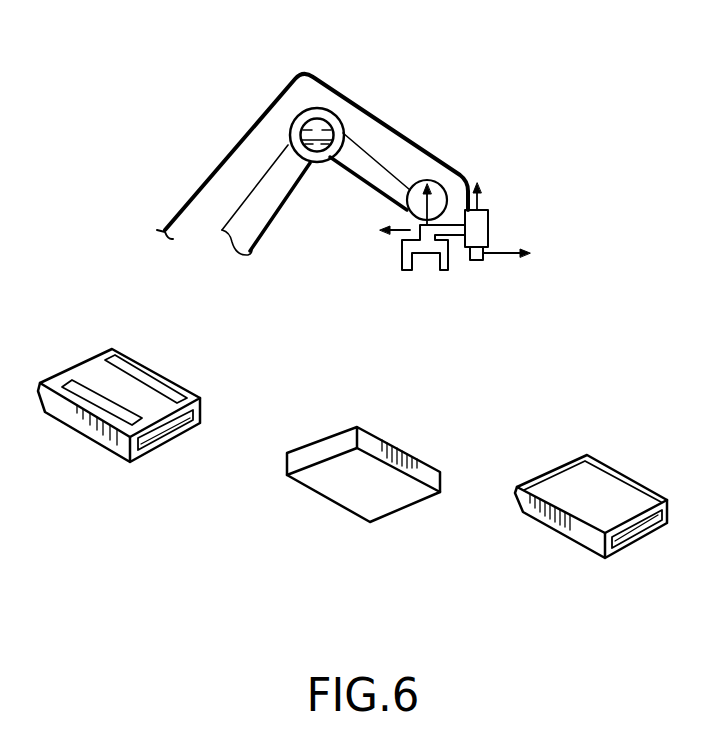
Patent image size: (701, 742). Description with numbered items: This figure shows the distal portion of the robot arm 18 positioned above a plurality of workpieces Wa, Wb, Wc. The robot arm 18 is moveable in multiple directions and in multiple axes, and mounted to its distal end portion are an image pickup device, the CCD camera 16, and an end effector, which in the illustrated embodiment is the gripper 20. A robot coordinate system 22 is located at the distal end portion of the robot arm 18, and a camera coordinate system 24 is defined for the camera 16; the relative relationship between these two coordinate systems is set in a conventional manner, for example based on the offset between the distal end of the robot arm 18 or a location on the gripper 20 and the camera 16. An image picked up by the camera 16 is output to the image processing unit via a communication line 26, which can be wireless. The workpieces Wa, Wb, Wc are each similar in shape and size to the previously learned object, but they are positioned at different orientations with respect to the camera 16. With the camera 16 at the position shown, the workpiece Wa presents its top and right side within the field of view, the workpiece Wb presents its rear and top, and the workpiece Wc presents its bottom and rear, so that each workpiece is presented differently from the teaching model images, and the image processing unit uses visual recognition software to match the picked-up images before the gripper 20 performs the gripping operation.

The communication line 26 is at (323, 78).
The robot arm 18 is at (247, 239).
The robot coordinate system 22 is at (402, 232).
The gripper 20 is at (440, 270).
The camera coordinate system 24 is at (498, 249).
The CCD camera 16 is at (468, 247).
The workpiece Wa is at (70, 417).
The workpiece Wb is at (328, 488).
The workpiece Wc is at (568, 523).